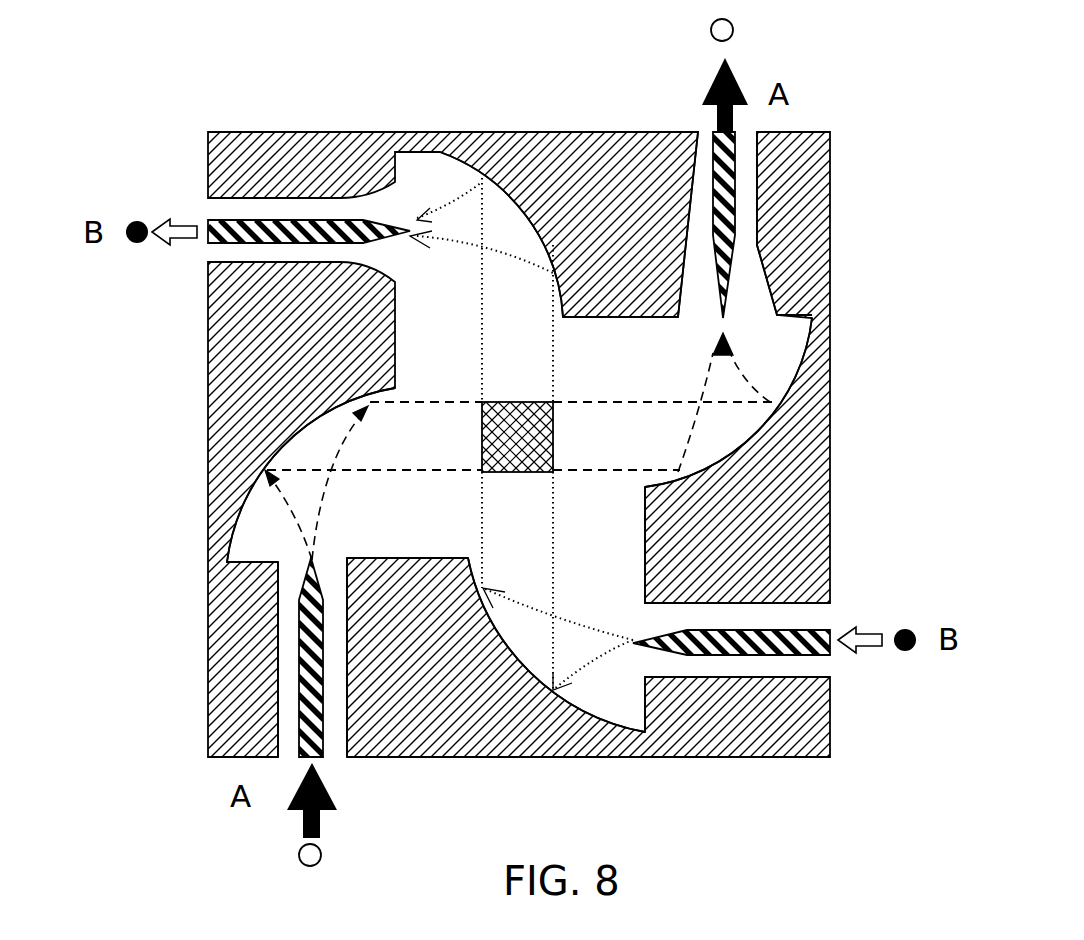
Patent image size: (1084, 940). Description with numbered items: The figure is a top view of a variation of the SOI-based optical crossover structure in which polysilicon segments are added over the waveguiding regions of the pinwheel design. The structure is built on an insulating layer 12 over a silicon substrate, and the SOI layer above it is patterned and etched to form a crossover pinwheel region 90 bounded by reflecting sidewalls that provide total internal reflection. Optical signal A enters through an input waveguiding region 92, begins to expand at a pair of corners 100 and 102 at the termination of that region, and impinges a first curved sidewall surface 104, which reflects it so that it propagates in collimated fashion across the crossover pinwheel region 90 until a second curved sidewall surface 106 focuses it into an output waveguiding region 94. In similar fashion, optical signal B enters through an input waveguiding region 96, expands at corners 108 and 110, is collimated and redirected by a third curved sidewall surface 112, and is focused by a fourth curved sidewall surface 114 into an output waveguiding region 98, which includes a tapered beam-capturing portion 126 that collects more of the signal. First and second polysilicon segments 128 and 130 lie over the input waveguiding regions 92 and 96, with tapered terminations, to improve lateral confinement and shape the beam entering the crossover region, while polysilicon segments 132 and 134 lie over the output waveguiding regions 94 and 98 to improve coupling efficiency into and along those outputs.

The insulating layer 12 is at (800, 163).
The crossover pinwheel region 90 is at (517, 300).
The input waveguiding region 92 is at (293, 647).
The output waveguiding region 94 is at (743, 153).
The input waveguiding region 96 is at (805, 620).
The output waveguiding region 98 is at (243, 252).
The corner 100 is at (212, 622).
The corner 102 is at (350, 563).
The first curved sidewall surface 104 is at (320, 423).
The second curved sidewall surface 106 is at (800, 375).
The corner 108 is at (645, 680).
The corner 110 is at (670, 592).
The third curved sidewall surface 112 is at (517, 673).
The fourth curved sidewall surface 114 is at (483, 145).
The beam-capturing portion 126 is at (363, 203).
The first polysilicon segment 128 is at (303, 713).
The second polysilicon segment 130 is at (800, 647).
The polysilicon segment 132 is at (730, 230).
The polysilicon segment 134 is at (227, 218).